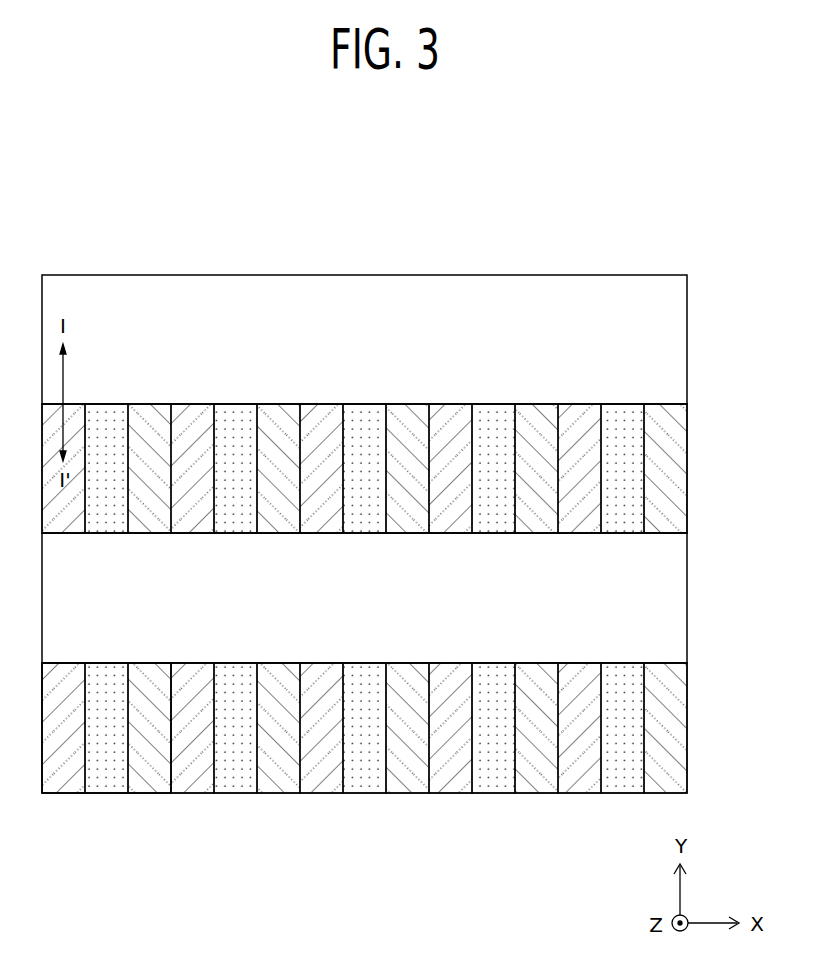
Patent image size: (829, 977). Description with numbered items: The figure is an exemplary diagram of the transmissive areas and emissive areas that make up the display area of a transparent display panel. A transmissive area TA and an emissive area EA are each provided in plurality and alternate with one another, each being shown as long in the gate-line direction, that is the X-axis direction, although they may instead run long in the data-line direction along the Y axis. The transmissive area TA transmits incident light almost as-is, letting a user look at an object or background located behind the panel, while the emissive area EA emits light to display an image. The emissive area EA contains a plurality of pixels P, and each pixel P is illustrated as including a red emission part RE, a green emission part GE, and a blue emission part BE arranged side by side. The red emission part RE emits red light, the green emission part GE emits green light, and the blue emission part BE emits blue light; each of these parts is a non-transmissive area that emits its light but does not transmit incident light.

The red emission part RE is at (62, 793).
The green emission part GE is at (106, 793).
The blue emission part BE is at (148, 793).
The pixel P is at (142, 855).
The transmissive area TA is at (699, 277).
The emissive area EA is at (699, 406).